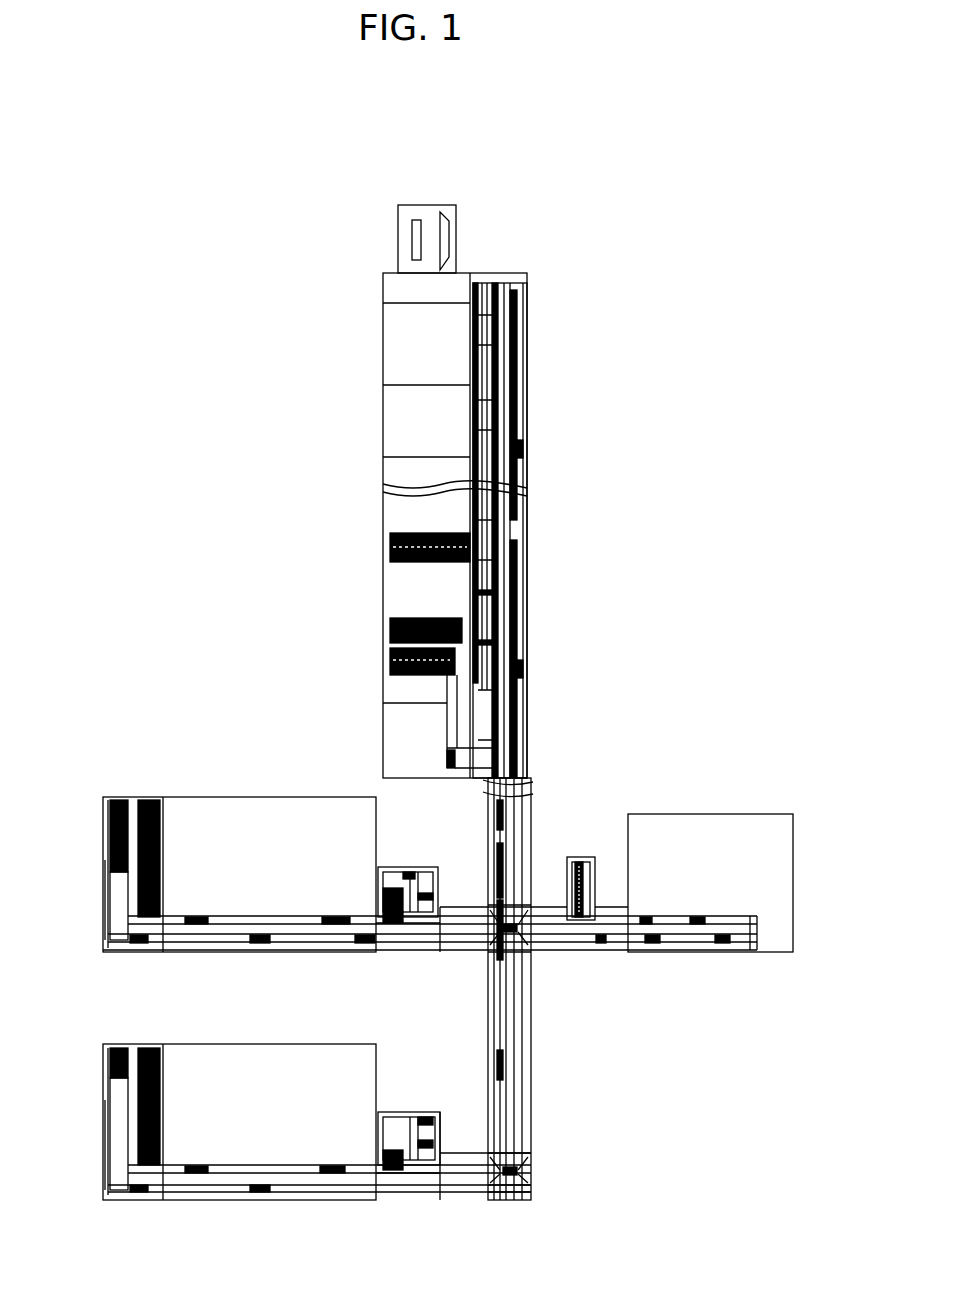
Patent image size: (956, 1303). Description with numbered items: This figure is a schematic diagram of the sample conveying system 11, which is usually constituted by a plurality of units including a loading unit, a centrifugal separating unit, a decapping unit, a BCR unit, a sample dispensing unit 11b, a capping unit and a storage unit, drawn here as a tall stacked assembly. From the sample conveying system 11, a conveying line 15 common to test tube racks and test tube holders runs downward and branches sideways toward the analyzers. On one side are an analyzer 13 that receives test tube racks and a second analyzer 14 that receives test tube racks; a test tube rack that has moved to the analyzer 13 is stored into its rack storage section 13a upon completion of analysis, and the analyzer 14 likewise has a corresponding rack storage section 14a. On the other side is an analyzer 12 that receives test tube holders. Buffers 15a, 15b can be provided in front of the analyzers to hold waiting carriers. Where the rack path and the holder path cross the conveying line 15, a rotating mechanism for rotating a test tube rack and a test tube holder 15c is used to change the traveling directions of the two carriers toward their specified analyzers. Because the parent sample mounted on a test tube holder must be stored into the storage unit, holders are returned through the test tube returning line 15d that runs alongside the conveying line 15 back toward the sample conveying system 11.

The sample conveying system 11 is at (320, 223).
The sample dispensing unit 11b is at (386, 708).
The analyzer that receives test tube holders 12 is at (705, 814).
The analyzer that receives test tube racks 13 is at (232, 797).
The rack storage section 13a is at (105, 897).
The analyzer that receives test tube racks 14 is at (269, 1044).
The rack storage section 14a is at (103, 1140).
The conveying line common to test tube racks and test tube holders 15 is at (528, 805).
The buffer 15a is at (409, 870).
The buffer 15b is at (596, 922).
The rotating mechanism for rotating a test tube rack and a test tube holder 15c is at (530, 1165).
The test tube returning line 15d is at (527, 848).